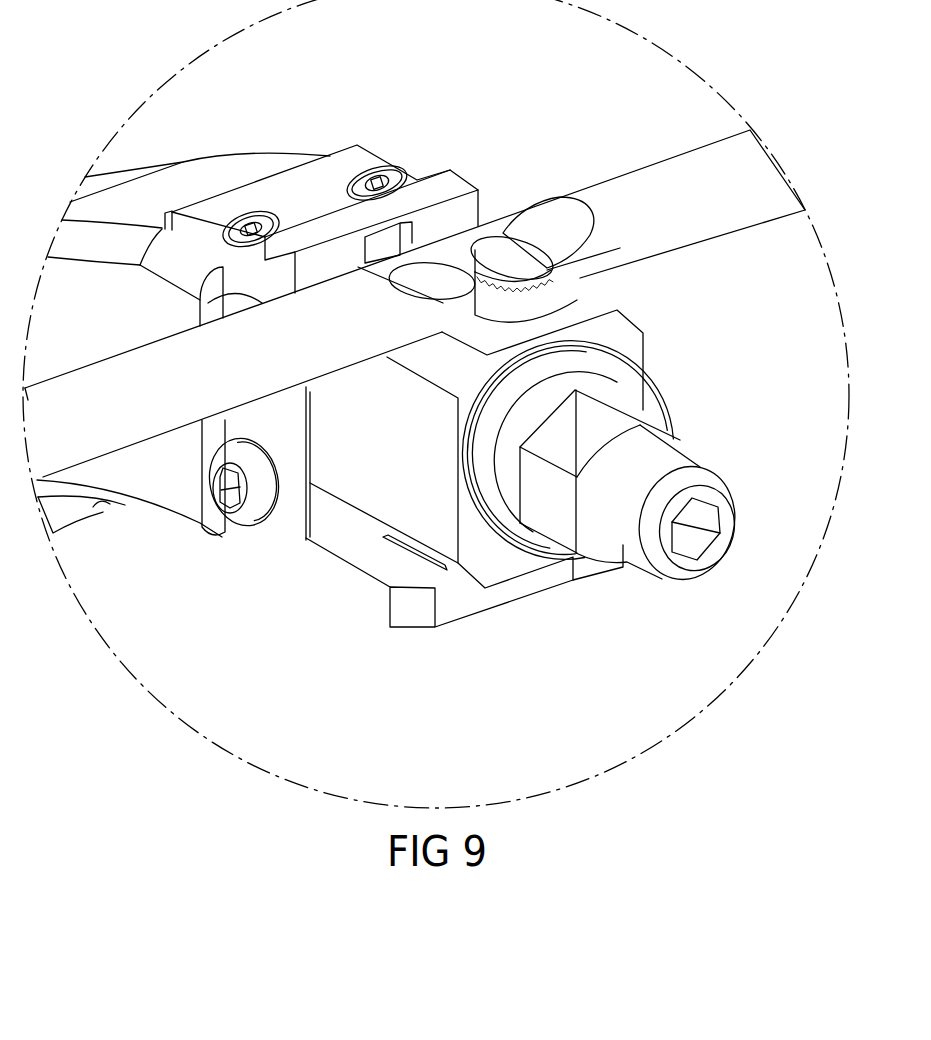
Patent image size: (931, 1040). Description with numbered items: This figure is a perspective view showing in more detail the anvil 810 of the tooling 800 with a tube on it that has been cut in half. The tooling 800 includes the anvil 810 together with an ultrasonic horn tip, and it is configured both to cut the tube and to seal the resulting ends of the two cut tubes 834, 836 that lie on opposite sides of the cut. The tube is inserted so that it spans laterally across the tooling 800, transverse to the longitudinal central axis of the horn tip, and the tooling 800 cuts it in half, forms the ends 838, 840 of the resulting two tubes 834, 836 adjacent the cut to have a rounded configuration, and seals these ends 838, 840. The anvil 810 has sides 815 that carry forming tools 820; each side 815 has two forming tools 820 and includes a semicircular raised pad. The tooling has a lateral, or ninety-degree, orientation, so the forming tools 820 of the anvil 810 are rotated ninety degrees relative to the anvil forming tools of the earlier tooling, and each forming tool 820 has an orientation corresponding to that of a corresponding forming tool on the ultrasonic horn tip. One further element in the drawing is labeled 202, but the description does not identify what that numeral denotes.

The clamp block 202 is at (368, 110).
The tooling 800 is at (622, 137).
The anvil 810 is at (646, 363).
The sides of anvil 815 is at (560, 300).
The forming tools 820 is at (465, 314).
The cut tube 834 is at (713, 230).
The cut tube 836 is at (120, 435).
The end of cut tube 838 is at (498, 248).
The end of cut tube 840 is at (437, 275).